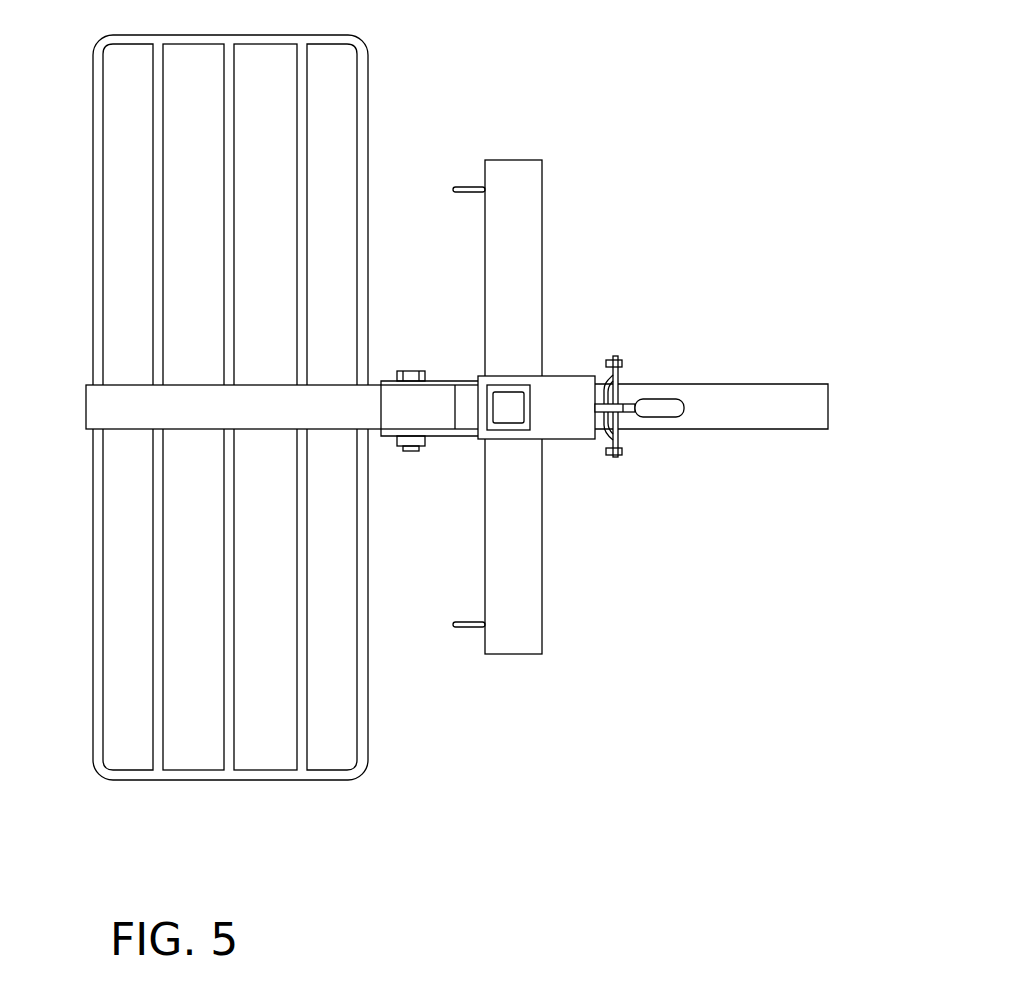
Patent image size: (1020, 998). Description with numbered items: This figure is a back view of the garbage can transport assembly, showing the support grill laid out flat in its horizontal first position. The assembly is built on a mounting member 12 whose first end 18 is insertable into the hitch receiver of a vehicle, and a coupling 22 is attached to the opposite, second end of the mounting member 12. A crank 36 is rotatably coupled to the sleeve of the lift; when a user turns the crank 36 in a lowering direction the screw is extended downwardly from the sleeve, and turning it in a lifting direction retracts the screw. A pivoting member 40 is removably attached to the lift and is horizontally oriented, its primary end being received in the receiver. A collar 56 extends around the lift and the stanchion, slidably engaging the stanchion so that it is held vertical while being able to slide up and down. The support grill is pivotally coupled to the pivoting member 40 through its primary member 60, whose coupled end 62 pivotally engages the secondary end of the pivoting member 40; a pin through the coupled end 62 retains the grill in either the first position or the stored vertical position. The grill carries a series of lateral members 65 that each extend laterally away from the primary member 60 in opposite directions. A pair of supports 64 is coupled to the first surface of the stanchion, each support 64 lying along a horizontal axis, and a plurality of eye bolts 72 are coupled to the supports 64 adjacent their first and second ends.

The mounting member 12 is at (720, 430).
The first end 18 is at (828, 408).
The coupling 22 is at (607, 455).
The crank 36 is at (660, 410).
The pivoting member 40 is at (440, 437).
The collar 56 is at (548, 397).
The primary member 60 is at (125, 385).
The coupled end 62 is at (460, 400).
The supports 64 is at (542, 641).
The slats 65 is at (224, 100).
The eye bolts 72 is at (468, 187).